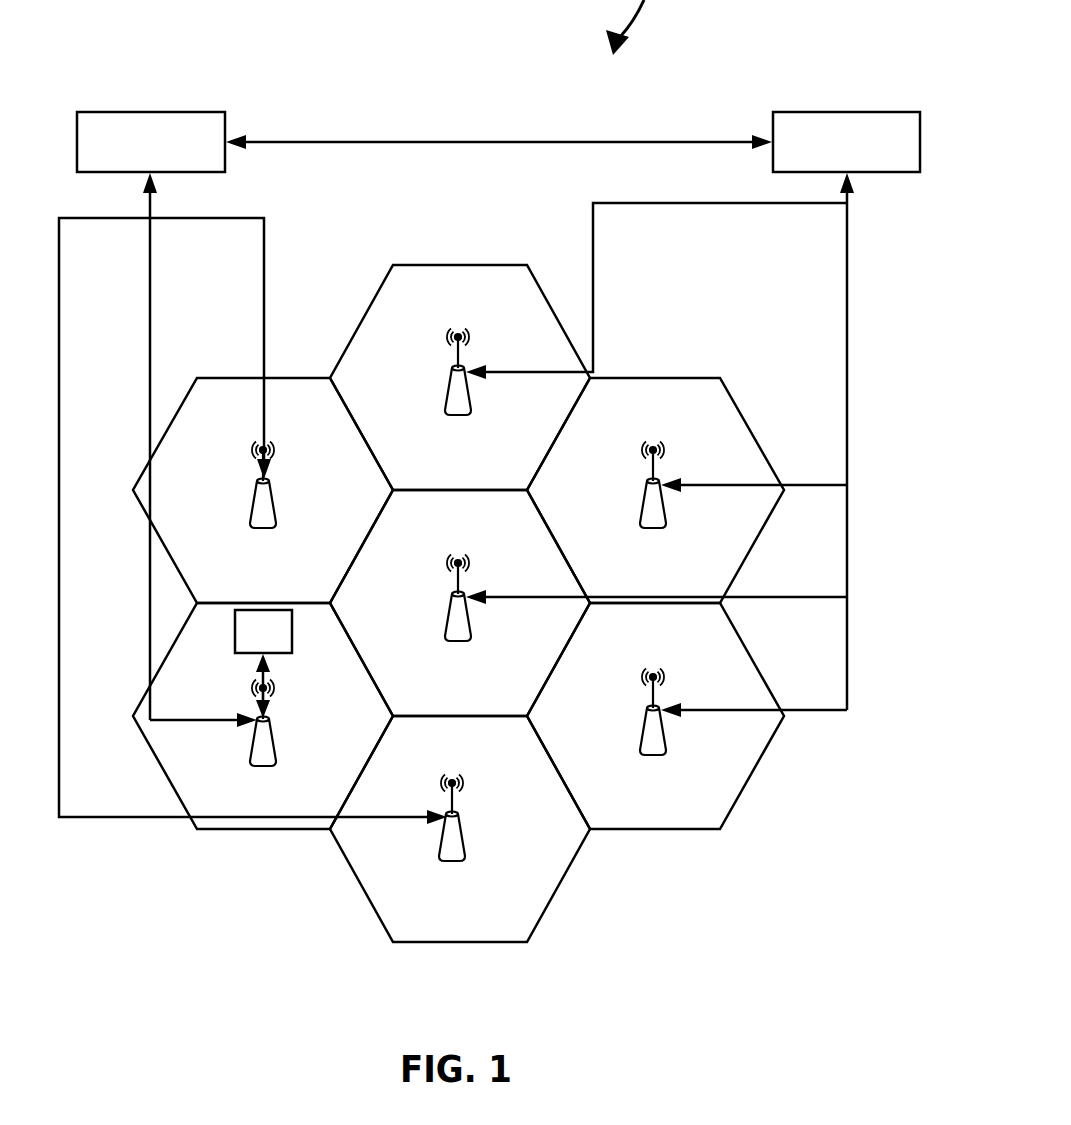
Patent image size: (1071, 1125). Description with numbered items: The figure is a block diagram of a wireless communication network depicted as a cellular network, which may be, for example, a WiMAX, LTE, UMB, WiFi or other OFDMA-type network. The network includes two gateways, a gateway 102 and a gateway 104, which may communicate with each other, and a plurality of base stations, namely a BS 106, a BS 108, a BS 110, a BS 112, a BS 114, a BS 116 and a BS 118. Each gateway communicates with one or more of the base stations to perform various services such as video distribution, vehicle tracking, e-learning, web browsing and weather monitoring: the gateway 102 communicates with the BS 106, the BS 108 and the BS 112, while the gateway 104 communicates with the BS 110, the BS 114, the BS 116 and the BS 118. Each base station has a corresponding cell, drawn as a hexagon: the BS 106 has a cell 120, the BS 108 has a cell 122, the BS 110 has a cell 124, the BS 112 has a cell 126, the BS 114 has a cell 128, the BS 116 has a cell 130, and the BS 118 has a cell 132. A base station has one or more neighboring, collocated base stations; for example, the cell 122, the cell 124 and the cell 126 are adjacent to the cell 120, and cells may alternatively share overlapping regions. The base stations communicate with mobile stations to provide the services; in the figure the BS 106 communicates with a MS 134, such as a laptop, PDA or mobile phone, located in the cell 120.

The gateway 102 is at (150, 110).
The gateway 104 is at (847, 110).
The base station 106 is at (261, 767).
The base station 108 is at (260, 530).
The base station 110 is at (455, 643).
The base station 112 is at (449, 863).
The base station 114 is at (455, 417).
The base station 116 is at (650, 530).
The base station 118 is at (650, 757).
The cell 120 is at (197, 829).
The cell 122 is at (197, 378).
The cell 124 is at (393, 490).
The cell 126 is at (393, 942).
The cell 128 is at (393, 265).
The cell 130 is at (720, 378).
The cell 132 is at (720, 829).
The mobile station 134 is at (292, 640).